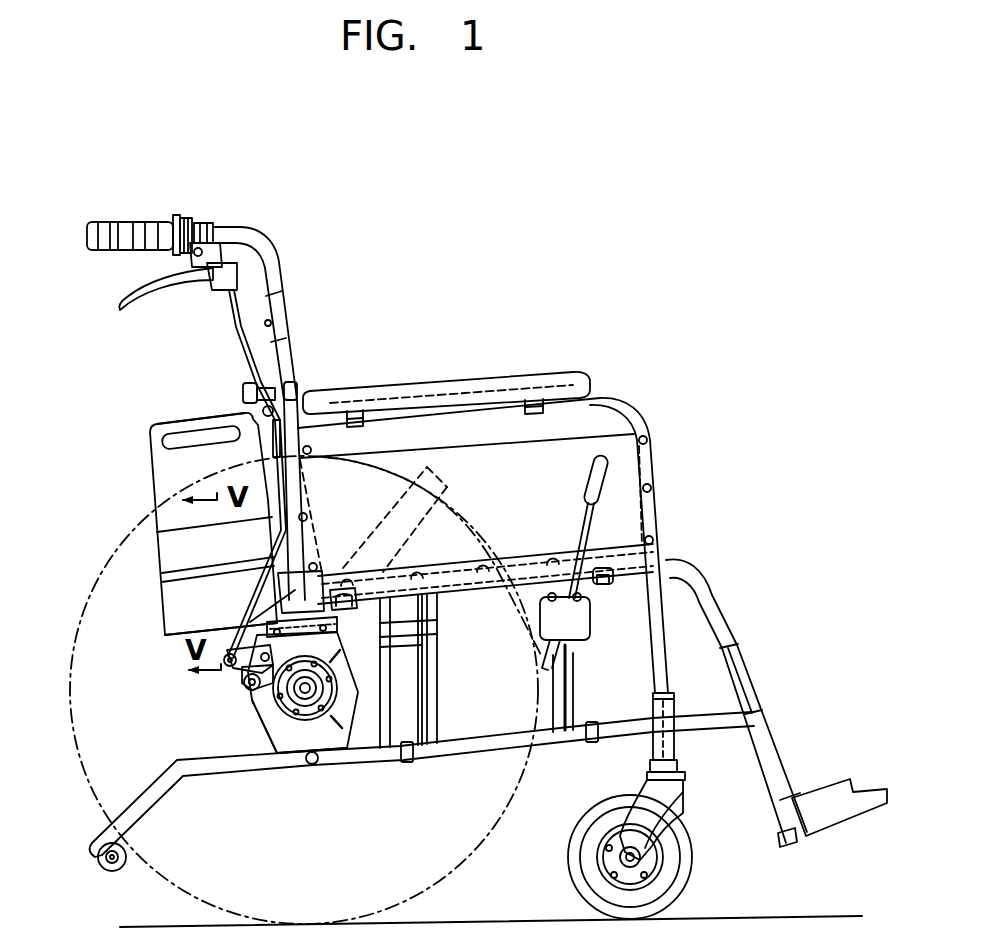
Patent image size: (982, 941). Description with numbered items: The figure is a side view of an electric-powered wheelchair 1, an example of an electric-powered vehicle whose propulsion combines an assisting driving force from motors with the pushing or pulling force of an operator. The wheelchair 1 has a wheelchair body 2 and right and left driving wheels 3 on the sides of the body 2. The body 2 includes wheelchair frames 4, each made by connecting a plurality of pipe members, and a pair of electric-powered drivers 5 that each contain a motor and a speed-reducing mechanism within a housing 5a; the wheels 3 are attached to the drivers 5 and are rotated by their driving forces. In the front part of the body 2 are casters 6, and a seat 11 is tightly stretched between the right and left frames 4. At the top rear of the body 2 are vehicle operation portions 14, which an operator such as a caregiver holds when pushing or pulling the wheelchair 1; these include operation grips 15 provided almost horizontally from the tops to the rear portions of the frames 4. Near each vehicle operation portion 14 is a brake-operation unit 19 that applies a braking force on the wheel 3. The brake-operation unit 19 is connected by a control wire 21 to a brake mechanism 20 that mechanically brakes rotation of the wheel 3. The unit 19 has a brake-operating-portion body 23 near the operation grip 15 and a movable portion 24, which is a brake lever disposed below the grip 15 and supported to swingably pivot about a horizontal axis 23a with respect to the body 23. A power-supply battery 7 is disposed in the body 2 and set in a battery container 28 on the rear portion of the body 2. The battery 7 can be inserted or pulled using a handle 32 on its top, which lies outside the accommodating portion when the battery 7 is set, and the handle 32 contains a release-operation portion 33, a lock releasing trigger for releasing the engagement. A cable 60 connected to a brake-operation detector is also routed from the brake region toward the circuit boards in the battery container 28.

The electric-powered wheelchair 1 is at (345, 283).
The wheelchair body 2 is at (606, 360).
The wheel (driving wheel) 3 is at (470, 860).
The wheelchair frame 4 is at (632, 403).
The electric-powered driver 5 is at (246, 720).
The housing 5a is at (277, 733).
The caster 6 is at (680, 850).
The power-supply battery 7 is at (173, 470).
The seat 11 is at (604, 552).
The vehicle operation portion 14 is at (106, 195).
The operation grip 15 is at (140, 223).
The brake-operation unit 19 is at (176, 292).
The brake mechanism 20 is at (226, 677).
The control wire 21 is at (287, 345).
The brake-operating-portion body 23 is at (216, 232).
The horizontal axis 23a is at (201, 222).
The movable portion (brake lever) 24 is at (123, 293).
The battery container 28 is at (183, 603).
The handle 32 is at (173, 422).
The release-operation portion (lock releasing trigger) 33 is at (207, 435).
The cable 60 is at (233, 294).